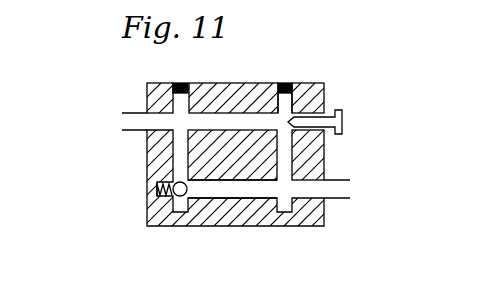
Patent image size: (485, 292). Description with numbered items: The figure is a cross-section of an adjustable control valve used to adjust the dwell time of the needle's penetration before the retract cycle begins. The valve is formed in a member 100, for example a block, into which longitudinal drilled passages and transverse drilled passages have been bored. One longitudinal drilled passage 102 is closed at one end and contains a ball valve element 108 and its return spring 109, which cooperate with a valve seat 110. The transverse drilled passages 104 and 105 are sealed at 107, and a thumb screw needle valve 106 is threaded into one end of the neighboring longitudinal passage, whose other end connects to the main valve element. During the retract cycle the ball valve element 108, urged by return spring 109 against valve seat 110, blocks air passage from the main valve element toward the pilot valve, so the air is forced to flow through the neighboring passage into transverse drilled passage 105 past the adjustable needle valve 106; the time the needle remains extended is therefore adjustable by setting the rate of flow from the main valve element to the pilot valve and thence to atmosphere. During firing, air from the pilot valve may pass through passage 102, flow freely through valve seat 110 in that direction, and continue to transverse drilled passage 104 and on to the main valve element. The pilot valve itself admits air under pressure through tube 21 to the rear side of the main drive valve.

The tube 21 is at (332, 190).
The member 100 is at (273, 227).
The longitudinal drilled passage 102 is at (210, 188).
The transverse drilled passage 104 is at (172, 103).
The transverse drilled passage 105 is at (287, 103).
The thumb screw needle valve 106 is at (343, 116).
The seal 107 is at (287, 83).
The ball valve element 108 is at (170, 196).
The return spring 109 is at (157, 189).
The valve seat 110 is at (183, 172).